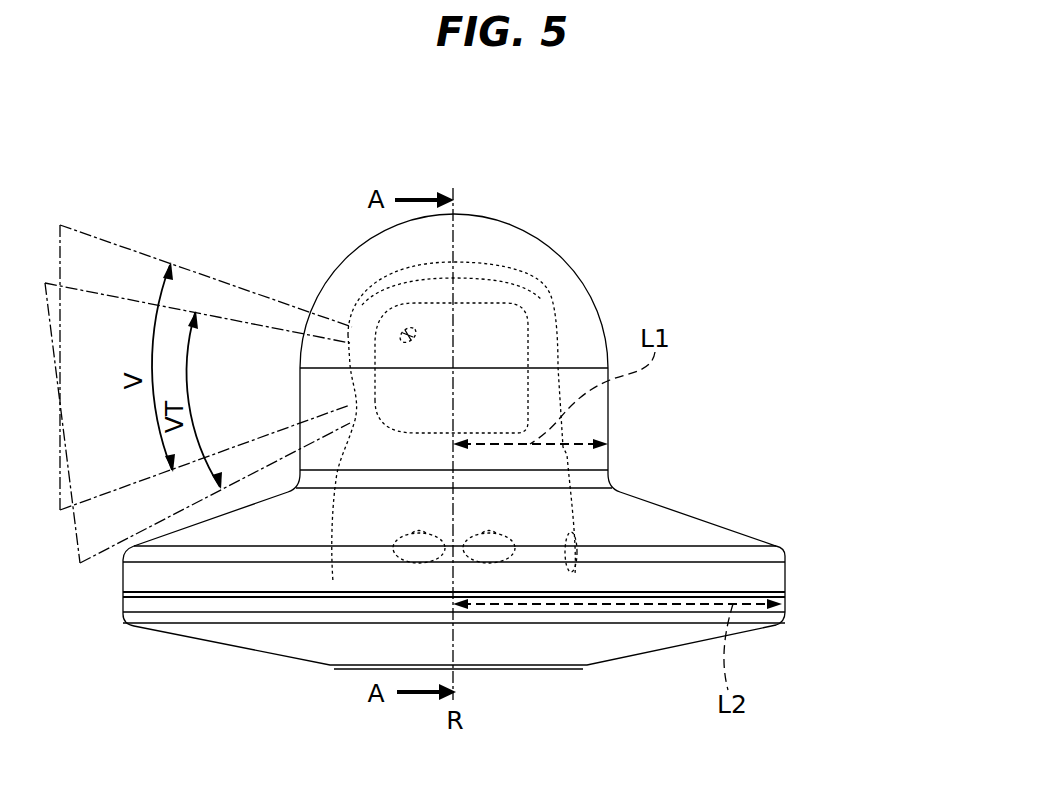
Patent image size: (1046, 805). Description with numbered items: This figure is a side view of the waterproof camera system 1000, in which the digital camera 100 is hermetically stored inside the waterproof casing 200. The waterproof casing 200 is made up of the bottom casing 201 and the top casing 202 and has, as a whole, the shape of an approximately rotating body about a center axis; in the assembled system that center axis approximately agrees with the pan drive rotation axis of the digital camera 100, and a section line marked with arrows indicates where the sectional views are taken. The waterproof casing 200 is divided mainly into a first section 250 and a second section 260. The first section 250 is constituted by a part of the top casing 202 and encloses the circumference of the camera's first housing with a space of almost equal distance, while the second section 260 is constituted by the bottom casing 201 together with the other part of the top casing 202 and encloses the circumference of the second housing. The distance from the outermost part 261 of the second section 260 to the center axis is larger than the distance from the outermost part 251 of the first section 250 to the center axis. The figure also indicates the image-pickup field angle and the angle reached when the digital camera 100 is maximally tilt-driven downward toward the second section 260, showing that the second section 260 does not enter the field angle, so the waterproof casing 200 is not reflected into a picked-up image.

The waterproof camera system 1000 is at (430, 123).
The digital camera 100 is at (547, 305).
The waterproof casing 200 is at (555, 250).
The bottom casing 201 is at (295, 633).
The top casing 202 is at (208, 577).
The first section 250 is at (859, 211).
The outermost part of the first section 251 is at (610, 410).
The second section 260 is at (859, 487).
The outermost part of the second section 261 is at (787, 585).